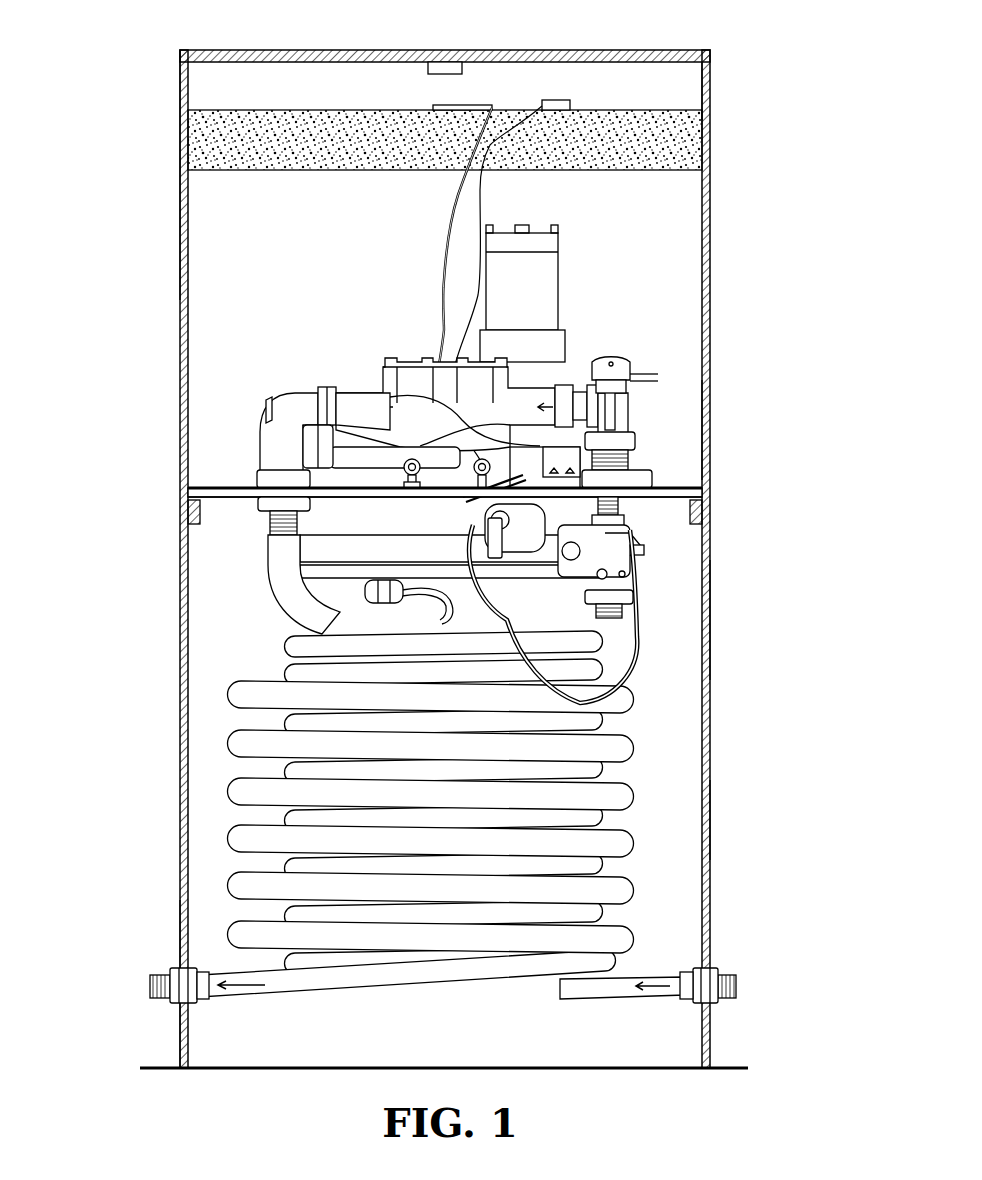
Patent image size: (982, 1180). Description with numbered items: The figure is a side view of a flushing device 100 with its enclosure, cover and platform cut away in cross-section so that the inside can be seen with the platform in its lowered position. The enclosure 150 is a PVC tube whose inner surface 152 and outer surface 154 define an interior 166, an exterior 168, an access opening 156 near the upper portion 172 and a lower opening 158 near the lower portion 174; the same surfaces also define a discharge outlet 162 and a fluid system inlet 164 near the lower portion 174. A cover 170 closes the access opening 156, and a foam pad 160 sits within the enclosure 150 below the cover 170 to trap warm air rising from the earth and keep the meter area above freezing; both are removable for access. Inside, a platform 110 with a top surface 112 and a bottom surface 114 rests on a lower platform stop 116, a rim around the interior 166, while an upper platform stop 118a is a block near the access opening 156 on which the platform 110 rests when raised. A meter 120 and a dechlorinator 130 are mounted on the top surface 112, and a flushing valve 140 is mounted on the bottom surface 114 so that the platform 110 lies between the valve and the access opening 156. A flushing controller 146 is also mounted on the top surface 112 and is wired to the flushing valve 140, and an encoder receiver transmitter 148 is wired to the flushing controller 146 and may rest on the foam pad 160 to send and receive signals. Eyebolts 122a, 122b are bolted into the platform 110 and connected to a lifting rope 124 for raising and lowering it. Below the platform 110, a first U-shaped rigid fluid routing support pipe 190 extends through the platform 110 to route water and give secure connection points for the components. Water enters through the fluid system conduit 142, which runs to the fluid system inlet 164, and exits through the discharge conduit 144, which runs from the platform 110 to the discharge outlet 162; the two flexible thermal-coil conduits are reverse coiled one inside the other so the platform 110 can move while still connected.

The flushing device 100 is at (742, 40).
The platform 110 is at (673, 485).
The top surface 112 is at (226, 486).
The bottom surface 114 is at (228, 500).
The lower platform stop 116 is at (181, 515).
The upper platform stop 118a is at (455, 68).
The meter 120 is at (408, 362).
The eyebolt 122a is at (412, 476).
The eyebolt 122b is at (497, 467).
The lifting rope 124 is at (440, 247).
The dechlorinator 130 is at (540, 281).
The flushing valve 140 is at (640, 527).
The fluid system conduit 142 is at (650, 992).
The discharge conduit 144 is at (232, 998).
The flushing controller 146 is at (268, 413).
The encoder receiver transmitter 148 is at (556, 100).
The enclosure 150 is at (442, 535).
The inner surface 152 is at (449, 887).
The outer surface 154 is at (712, 617).
The access opening 156 is at (645, 62).
The lower opening 158 is at (580, 1069).
The foam pad 160 is at (215, 135).
The discharge outlet 162 is at (185, 965).
The fluid system inlet 164 is at (718, 975).
The interior 166 is at (700, 840).
The exterior 168 is at (712, 530).
The cover 170 is at (316, 50).
The upper portion 172 is at (179, 78).
The lower portion 174 is at (178, 1062).
The first U-shaped rigid fluid routing support pipe 190 is at (278, 588).